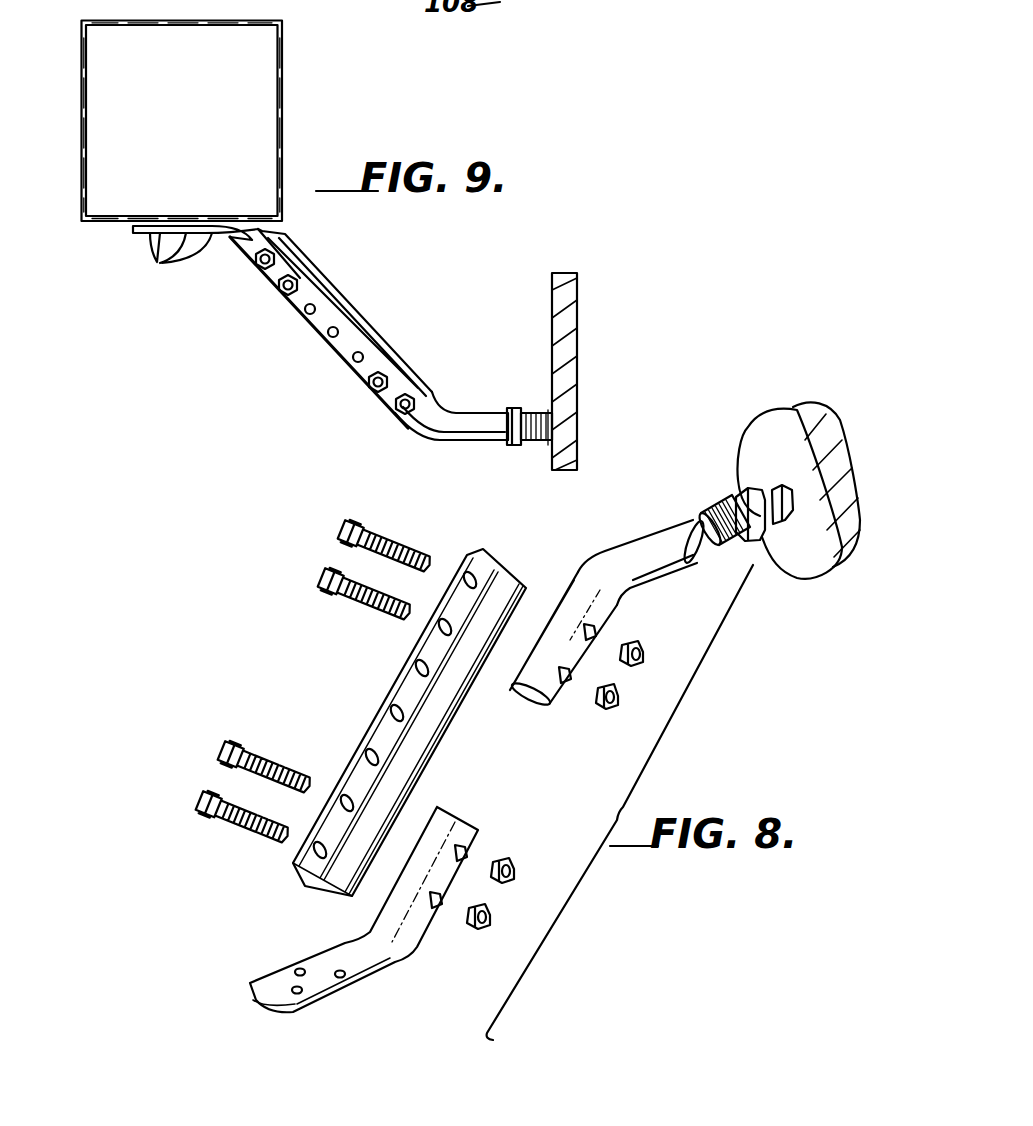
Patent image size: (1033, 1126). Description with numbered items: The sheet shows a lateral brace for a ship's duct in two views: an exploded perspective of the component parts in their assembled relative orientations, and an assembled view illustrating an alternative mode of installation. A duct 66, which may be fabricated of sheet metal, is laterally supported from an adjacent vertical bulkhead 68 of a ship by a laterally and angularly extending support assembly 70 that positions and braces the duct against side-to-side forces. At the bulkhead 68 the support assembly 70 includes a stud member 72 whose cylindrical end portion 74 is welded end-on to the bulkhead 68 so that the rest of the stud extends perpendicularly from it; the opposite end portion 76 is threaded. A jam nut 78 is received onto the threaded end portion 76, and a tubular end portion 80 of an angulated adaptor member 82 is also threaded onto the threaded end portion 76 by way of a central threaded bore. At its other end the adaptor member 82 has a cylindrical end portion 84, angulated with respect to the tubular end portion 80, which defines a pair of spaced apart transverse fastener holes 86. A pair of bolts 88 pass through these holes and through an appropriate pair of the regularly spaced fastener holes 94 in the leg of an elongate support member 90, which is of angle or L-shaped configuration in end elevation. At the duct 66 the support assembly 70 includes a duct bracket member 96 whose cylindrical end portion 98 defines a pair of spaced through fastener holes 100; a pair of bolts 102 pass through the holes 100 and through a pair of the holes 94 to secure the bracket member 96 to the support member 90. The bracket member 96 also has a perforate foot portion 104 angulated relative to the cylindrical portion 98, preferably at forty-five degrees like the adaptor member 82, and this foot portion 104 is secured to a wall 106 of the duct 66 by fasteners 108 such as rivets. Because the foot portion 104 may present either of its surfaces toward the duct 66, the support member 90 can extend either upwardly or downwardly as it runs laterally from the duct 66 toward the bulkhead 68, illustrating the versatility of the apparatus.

In FIG. 9, the duct 66 is at (196, 134).
In FIG. 9, the vertical bulkhead 68 is at (560, 290).
In FIG. 8, the vertical bulkhead 68 is at (784, 410).
In FIG. 9, the support assembly 70 is at (326, 368).
In FIG. 8, the support assembly 70 is at (331, 690).
In FIG. 9, the stud member 72 is at (540, 393).
In FIG. 8, the stud member 72 is at (747, 470).
In FIG. 9, the cylindrical end portion 74 is at (546, 448).
In FIG. 8, the cylindrical end portion 74 is at (795, 486).
In FIG. 9, the threaded end portion 76 is at (522, 408).
In FIG. 8, the threaded end portion 76 is at (727, 503).
In FIG. 9, the jam nut 78 is at (514, 448).
In FIG. 8, the jam nut 78 is at (763, 560).
In FIG. 9, the tubular end portion 80 is at (462, 442).
In FIG. 8, the tubular end portion 80 is at (657, 530).
In FIG. 9, the angulated adaptor member 82 is at (415, 438).
In FIG. 8, the angulated adaptor member 82 is at (597, 561).
In FIG. 9, the cylindrical end portion 84 is at (380, 397).
In FIG. 8, the cylindrical end portion 84 is at (588, 664).
In FIG. 8, the fastener holes 86 is at (592, 630).
In FIG. 9, the bolts 88 is at (412, 399).
In FIG. 8, the bolts 88 is at (332, 575).
In FIG. 9, the elongate support member 90 is at (326, 322).
In FIG. 8, the elongate support member 90 is at (416, 750).
In FIG. 9, the fastener holes 94 is at (325, 336).
In FIG. 8, the fastener holes 94 is at (470, 570).
In FIG. 9, the duct bracket member 96 is at (243, 268).
In FIG. 8, the duct bracket member 96 is at (410, 970).
In FIG. 8, the cylindrical end portion 98 is at (455, 878).
In FIG. 8, the fastener holes 100 is at (470, 845).
In FIG. 9, the bolts 102 is at (277, 262).
In FIG. 8, the bolts 102 is at (205, 800).
In FIG. 8, the perforate foot portion 104 is at (265, 972).
In FIG. 9, the wall 106 is at (108, 232).
In FIG. 9, the fasteners 108 is at (155, 258).